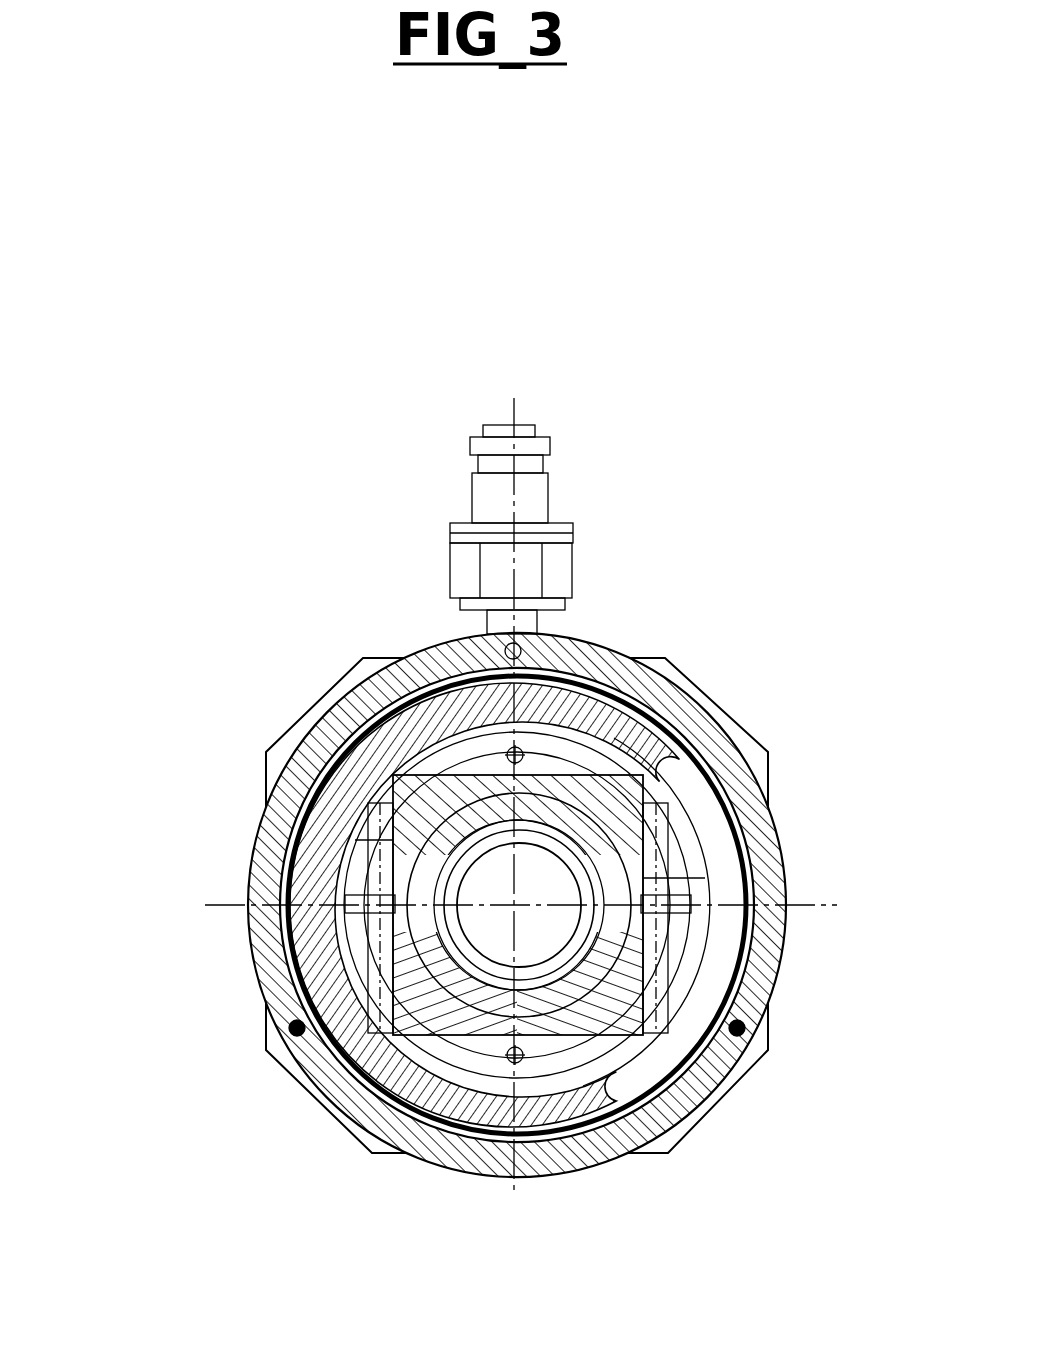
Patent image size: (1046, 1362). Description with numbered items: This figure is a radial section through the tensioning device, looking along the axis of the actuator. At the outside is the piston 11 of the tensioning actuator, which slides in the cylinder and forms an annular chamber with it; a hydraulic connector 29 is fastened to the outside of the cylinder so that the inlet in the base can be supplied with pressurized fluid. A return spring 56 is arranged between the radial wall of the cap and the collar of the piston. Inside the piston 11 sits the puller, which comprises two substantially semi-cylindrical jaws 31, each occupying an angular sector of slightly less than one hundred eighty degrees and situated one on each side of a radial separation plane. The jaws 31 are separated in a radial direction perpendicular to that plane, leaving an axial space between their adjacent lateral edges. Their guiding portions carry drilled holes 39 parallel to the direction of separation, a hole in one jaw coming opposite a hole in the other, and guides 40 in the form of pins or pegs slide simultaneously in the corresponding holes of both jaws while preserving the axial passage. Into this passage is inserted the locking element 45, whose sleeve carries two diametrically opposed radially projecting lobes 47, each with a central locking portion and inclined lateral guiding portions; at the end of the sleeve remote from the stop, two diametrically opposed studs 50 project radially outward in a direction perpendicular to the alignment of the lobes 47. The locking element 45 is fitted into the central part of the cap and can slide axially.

The piston 11 is at (653, 1050).
The hydraulic connector 29 is at (548, 490).
The jaws 31 is at (676, 765).
The drilled holes 39 is at (358, 790).
The guides 40 is at (362, 842).
The locking element 45 is at (348, 1082).
The lobes 47 is at (485, 820).
The studs 50 is at (372, 940).
The return spring 56 is at (640, 655).